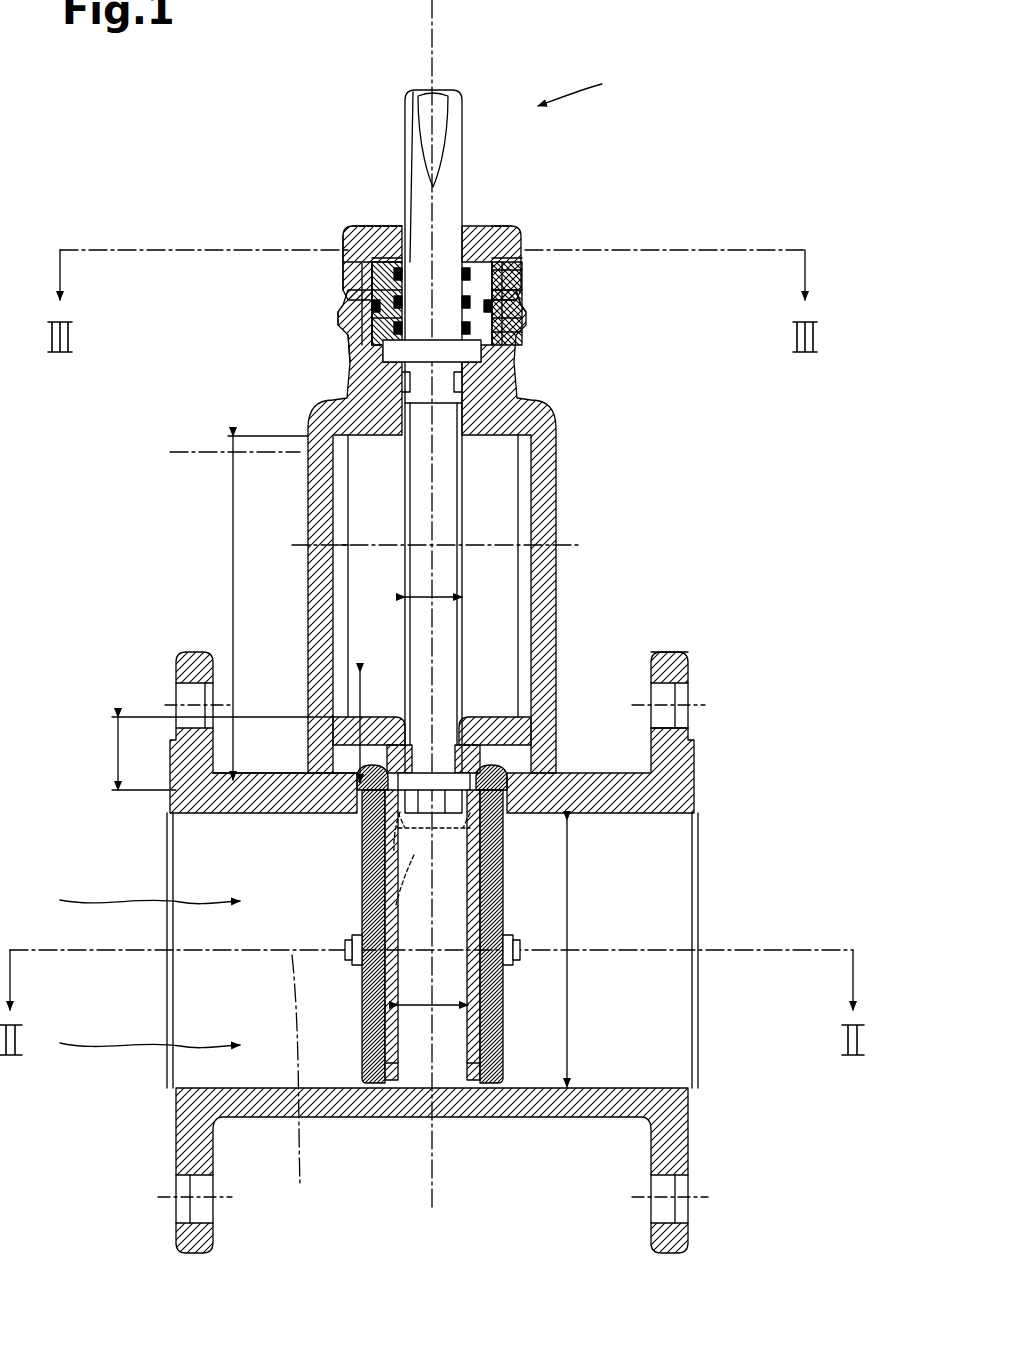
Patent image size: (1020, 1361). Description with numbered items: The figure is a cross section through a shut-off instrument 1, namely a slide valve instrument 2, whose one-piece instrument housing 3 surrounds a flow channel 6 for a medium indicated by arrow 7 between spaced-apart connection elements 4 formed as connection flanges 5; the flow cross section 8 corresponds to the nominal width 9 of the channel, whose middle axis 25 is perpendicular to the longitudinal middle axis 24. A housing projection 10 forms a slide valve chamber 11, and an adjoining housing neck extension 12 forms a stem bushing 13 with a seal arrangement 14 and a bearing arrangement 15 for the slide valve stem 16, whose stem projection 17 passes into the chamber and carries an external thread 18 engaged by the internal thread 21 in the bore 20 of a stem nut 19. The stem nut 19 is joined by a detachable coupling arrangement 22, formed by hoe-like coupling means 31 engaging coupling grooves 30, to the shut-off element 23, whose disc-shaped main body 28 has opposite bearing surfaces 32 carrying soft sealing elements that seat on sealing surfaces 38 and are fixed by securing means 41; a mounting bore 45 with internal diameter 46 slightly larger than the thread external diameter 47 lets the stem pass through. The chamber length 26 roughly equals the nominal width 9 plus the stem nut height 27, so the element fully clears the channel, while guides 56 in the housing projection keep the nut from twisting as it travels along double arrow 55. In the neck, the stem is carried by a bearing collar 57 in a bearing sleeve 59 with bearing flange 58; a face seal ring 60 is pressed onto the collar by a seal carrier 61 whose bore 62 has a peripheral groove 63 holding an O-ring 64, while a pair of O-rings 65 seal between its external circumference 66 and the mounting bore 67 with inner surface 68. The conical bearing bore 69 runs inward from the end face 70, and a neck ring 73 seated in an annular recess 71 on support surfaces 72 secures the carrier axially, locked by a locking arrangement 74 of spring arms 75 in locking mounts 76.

The shut-off instrument 1 is at (712, 282).
The slide valve instrument 2 is at (683, 362).
The instrument housing 3 is at (568, 1092).
The connection elements 4 is at (732, 640).
The connection flanges 5 is at (655, 752).
The flow channel 6 is at (162, 980).
The arrow 7 is at (172, 1050).
The flow cross section 8 is at (736, 836).
The nominal width 9 is at (568, 1030).
The housing projection 10 is at (508, 440).
The slide valve chamber 11 is at (440, 418).
The housing neck extension 12 is at (472, 366).
The stem bushing 13 is at (390, 205).
The seal arrangement 14 is at (392, 310).
The bearing arrangement 15 is at (380, 345).
The slide valve stem 16 is at (584, 80).
The stem projection 17 is at (460, 172).
The external thread 18 is at (468, 490).
The stem nut 19 is at (505, 700).
The bore 20 is at (438, 713).
The internal thread 21 is at (470, 706).
The detachable coupling arrangement 22 is at (508, 772).
The shut-off element 23 is at (512, 860).
The longitudinal middle axis 24 is at (182, 452).
The middle axis 25 is at (297, 1084).
The length 26 is at (232, 622).
The height 27 is at (112, 755).
The main body 28 is at (414, 1052).
The coupling grooves 30 is at (366, 898).
The hoe-like coupling means 31 is at (364, 832).
The bearing surfaces 32 is at (366, 868).
The sealing surfaces 38 is at (352, 776).
The securing means 41 is at (348, 986).
The mounting bore 45 is at (456, 1010).
The internal diameter 46 is at (444, 1012).
The thread external diameter 47 is at (440, 598).
The double arrow 55 is at (362, 708).
The guides 56 is at (345, 557).
The bearing collar 57 is at (476, 345).
The bearing flange 58 is at (362, 368).
The bearing sleeve 59 is at (466, 380).
The face seal ring 60 is at (370, 340).
The seal carrier 61 is at (372, 280).
The bore 62 is at (413, 295).
The peripheral groove 63 is at (393, 224).
The O-ring 64 is at (392, 262).
The O-rings 65 is at (368, 306).
The external circumference 66 is at (496, 288).
The mounting bore 67 is at (492, 300).
The inner surface 68 is at (520, 280).
The bearing bore 69 is at (356, 393).
The end face 70 is at (500, 252).
The annular recess 71 is at (380, 232).
The support surfaces 72 is at (482, 272).
The neck ring 73 is at (500, 224).
The locking arrangement 74 is at (345, 252).
The spring arms 75 is at (382, 257).
The locking mounts 76 is at (342, 266).